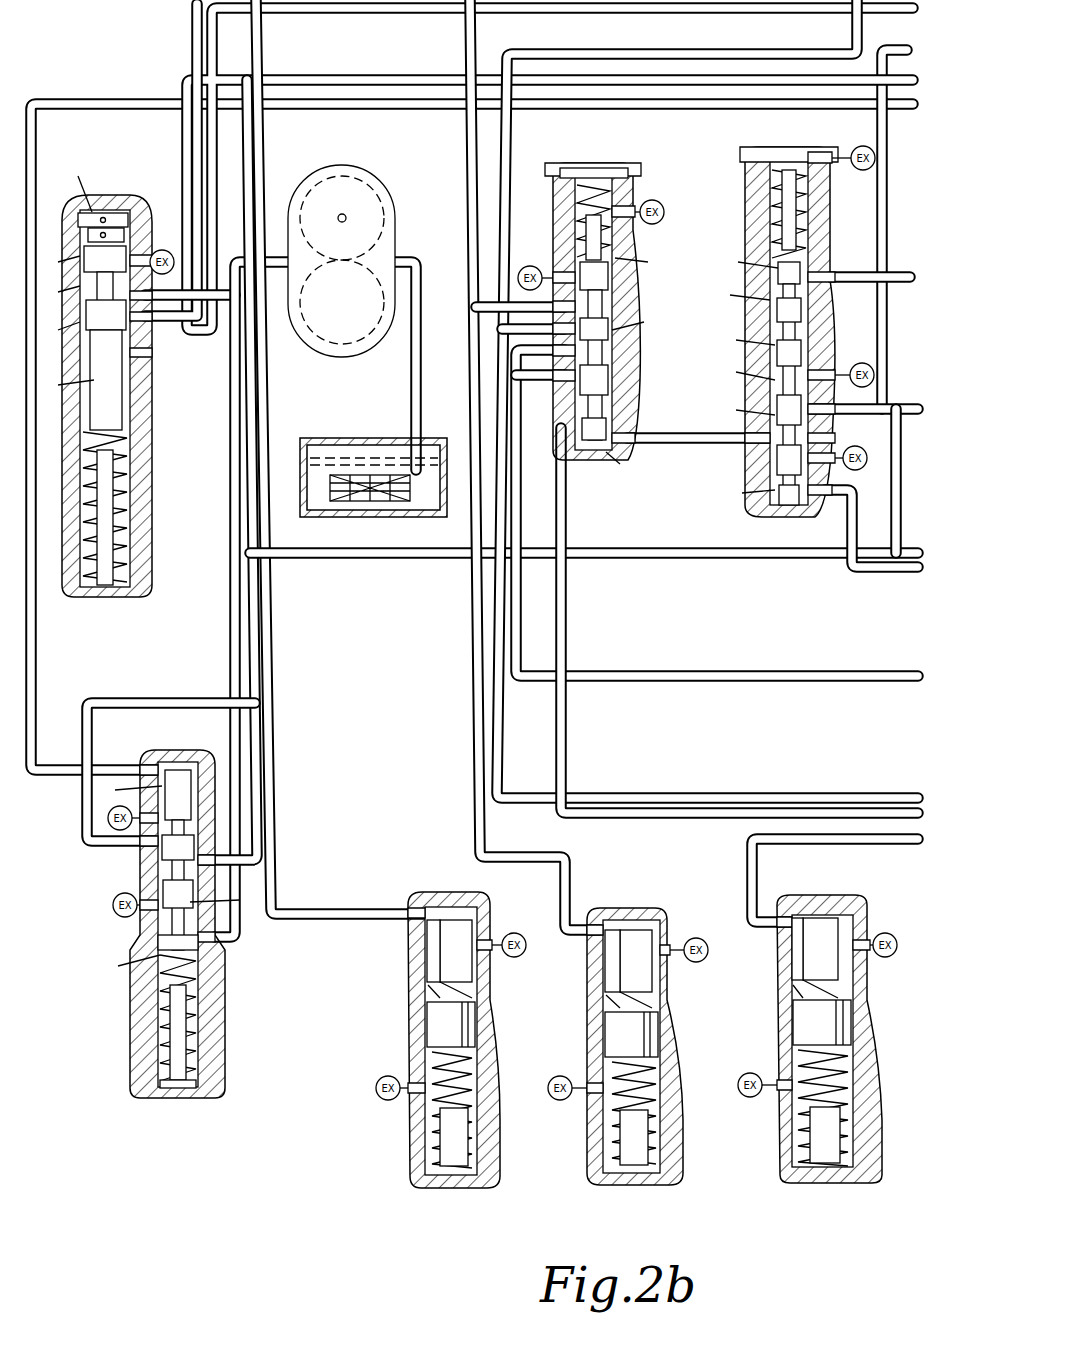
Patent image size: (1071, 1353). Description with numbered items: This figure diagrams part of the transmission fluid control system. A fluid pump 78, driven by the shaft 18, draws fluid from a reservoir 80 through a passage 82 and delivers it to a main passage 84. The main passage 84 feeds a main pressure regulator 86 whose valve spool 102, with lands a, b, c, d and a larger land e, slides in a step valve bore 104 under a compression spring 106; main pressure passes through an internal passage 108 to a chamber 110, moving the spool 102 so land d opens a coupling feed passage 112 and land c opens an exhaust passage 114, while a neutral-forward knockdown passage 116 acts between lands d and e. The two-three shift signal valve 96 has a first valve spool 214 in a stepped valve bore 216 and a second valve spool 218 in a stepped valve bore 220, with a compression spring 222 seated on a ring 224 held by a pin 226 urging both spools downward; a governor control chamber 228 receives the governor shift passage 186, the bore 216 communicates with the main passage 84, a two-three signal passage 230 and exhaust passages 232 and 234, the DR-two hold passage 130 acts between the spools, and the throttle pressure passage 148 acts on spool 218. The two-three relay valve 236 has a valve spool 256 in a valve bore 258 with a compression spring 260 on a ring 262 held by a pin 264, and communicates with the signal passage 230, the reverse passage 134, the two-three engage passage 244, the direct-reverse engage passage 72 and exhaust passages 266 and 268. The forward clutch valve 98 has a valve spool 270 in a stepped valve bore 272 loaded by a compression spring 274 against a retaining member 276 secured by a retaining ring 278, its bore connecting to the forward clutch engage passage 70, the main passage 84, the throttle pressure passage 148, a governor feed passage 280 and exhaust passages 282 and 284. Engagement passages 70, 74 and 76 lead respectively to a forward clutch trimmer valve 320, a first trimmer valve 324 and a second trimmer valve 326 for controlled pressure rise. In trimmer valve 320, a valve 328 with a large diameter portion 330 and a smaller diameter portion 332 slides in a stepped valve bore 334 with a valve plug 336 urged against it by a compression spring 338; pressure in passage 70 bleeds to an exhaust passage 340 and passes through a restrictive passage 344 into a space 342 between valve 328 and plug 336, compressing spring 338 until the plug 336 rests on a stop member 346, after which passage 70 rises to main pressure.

The shaft 18 is at (338, 216).
The forward clutch engage passage 70 is at (262, 48).
The direct-reverse engage passage 72 is at (855, 24).
The engagement passage 74 is at (882, 842).
The engagement passage 76 is at (468, 25).
The fluid pump 78 is at (364, 377).
The reservoir 80 is at (382, 442).
The passage 82 is at (420, 400).
The main passage 84 is at (245, 256).
The main pressure regulator valve 86 is at (124, 396).
The two-three shift signal valve 96 is at (793, 317).
The forward clutch valve 98 is at (182, 952).
The valve spool 102 is at (140, 258).
The step valve bore 104 is at (112, 340).
The compression spring 106 is at (136, 442).
The internal passage 108 is at (102, 212).
The chamber 110 is at (120, 228).
The coupling feed passage 112 is at (192, 20).
The exhaust passage 114 is at (140, 300).
The neutral-forward knockdown passage 116 is at (742, 70).
The DR2 hold passage 130 is at (905, 48).
The reverse passage 134 is at (565, 478).
The throttle pressure passage 148 is at (665, 6).
The governor shift passage 186 is at (872, 575).
The first valve spool 214 is at (772, 456).
The stepped valve bore 216 is at (822, 440).
The second valve spool 218 is at (772, 322).
The stepped valve bore 220 is at (812, 306).
The compression spring 222 is at (770, 248).
The ring 224 is at (762, 205).
The pin 226 is at (826, 206).
The governor control chamber 228 is at (762, 510).
The two-three signal passage 230 is at (656, 442).
The exhaust passage 232 is at (848, 480).
The exhaust passage 234 is at (838, 370).
The two-three relay valve 236 is at (560, 295).
The two-three engage passage 244 is at (498, 330).
The valve spool 256 is at (612, 305).
The valve bore 258 is at (612, 380).
The compression spring 260 is at (615, 248).
The ring 262 is at (565, 192).
The pin 264 is at (565, 180).
The exhaust passage 266 is at (556, 272).
The exhaust passage 268 is at (644, 208).
The valve spool 270 is at (172, 840).
The stepped valve bore 272 is at (200, 838).
The compression spring 274 is at (160, 1000).
The retaining member 276 is at (162, 1082).
The retaining ring 278 is at (216, 1090).
The governor feed passage 280 is at (60, 812).
The exhaust passage 282 is at (120, 918).
The exhaust passage 284 is at (116, 832).
The forward clutch trimmer valve 320 is at (450, 1057).
The first trimmer valve 324 is at (899, 1147).
The second trimmer valve 326 is at (695, 1146).
The valve 328 is at (475, 992).
The large diameter portion 330 is at (474, 978).
The smaller diameter portion 332 is at (492, 926).
The stepped valve bore 334 is at (428, 972).
The valve plug 336 is at (475, 1032).
The compression spring 338 is at (478, 1068).
The exhaust passage 340 is at (508, 932).
The space 342 is at (430, 1006).
The restrictive passage 344 is at (428, 1002).
The stop member 346 is at (445, 1130).